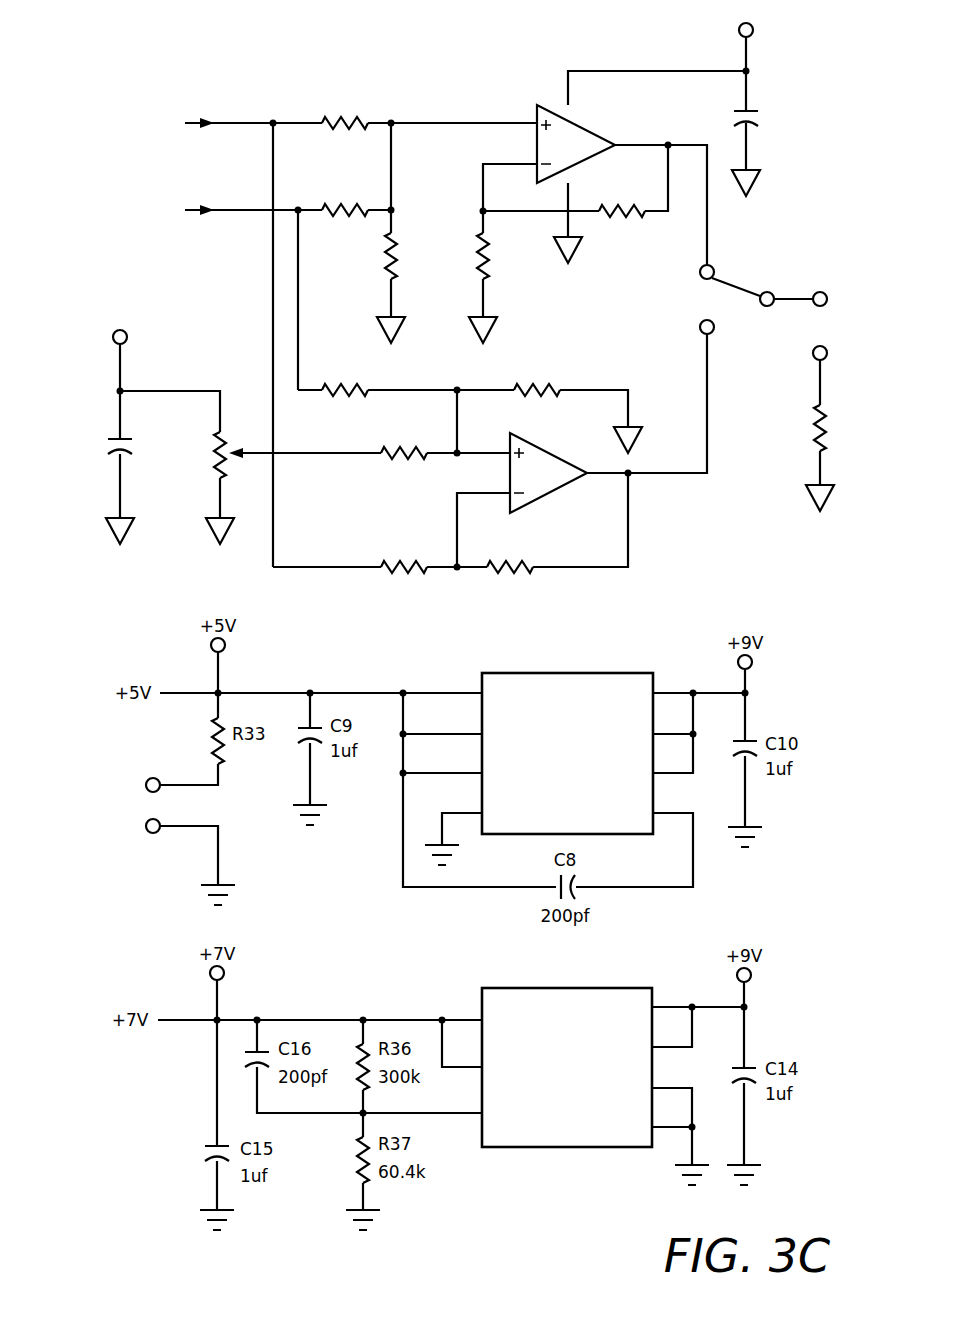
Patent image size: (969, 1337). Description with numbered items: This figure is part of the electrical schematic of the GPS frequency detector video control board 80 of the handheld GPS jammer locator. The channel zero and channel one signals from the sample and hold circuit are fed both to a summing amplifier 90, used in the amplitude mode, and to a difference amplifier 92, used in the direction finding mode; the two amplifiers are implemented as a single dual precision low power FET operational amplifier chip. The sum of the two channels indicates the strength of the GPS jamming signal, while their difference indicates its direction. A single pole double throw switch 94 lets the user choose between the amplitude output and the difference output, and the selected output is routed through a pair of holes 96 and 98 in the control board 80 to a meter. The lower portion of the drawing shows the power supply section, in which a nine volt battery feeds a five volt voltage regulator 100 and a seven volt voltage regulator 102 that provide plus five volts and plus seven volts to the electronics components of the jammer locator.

The video control board 80 is at (444, 58).
The summing amplifier 90 is at (535, 137).
The difference amplifier 92 is at (547, 478).
The single pole double throw switch 94 is at (748, 291).
The hole 96 is at (827, 299).
The hole 98 is at (827, 353).
The five volt voltage regulator 100 is at (566, 691).
The seven volt voltage regulator 102 is at (566, 1130).